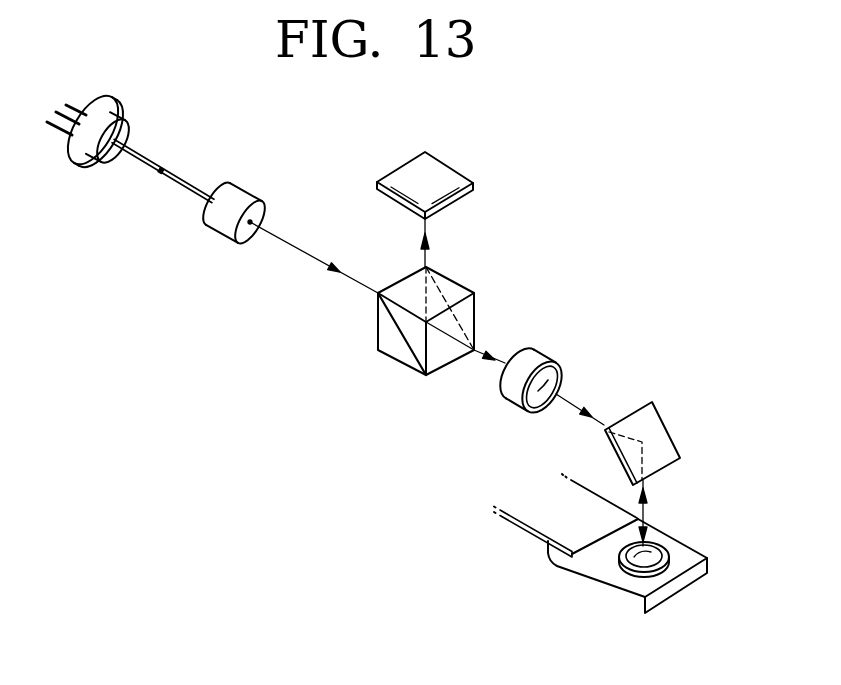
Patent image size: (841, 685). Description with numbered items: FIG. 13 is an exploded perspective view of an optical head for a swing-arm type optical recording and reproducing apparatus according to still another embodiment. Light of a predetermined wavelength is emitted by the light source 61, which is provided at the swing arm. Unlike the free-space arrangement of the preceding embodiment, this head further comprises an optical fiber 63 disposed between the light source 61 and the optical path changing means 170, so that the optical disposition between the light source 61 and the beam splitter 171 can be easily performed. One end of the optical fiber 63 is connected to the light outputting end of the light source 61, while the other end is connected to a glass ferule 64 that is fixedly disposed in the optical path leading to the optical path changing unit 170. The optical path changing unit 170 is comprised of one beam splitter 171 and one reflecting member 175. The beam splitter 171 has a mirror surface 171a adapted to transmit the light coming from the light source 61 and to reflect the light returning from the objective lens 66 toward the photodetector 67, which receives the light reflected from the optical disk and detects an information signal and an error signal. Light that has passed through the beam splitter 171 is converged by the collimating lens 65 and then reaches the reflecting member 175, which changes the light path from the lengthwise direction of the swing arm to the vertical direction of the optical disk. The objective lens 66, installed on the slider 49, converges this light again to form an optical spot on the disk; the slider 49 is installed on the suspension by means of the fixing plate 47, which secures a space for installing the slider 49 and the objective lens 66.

The light source 61 is at (110, 101).
The optical fiber 63 is at (187, 180).
The glass ferule 64 is at (251, 201).
The photodetector 67 is at (446, 175).
The optical path changing unit 170 is at (476, 316).
The beam splitter 171 is at (395, 350).
The mirror surface 171a is at (446, 352).
The collimating lens 65 is at (546, 352).
The reflecting member 175 is at (666, 434).
The objective lens 66 is at (662, 545).
The fixing plate 47 is at (512, 523).
The slider 49 is at (676, 588).